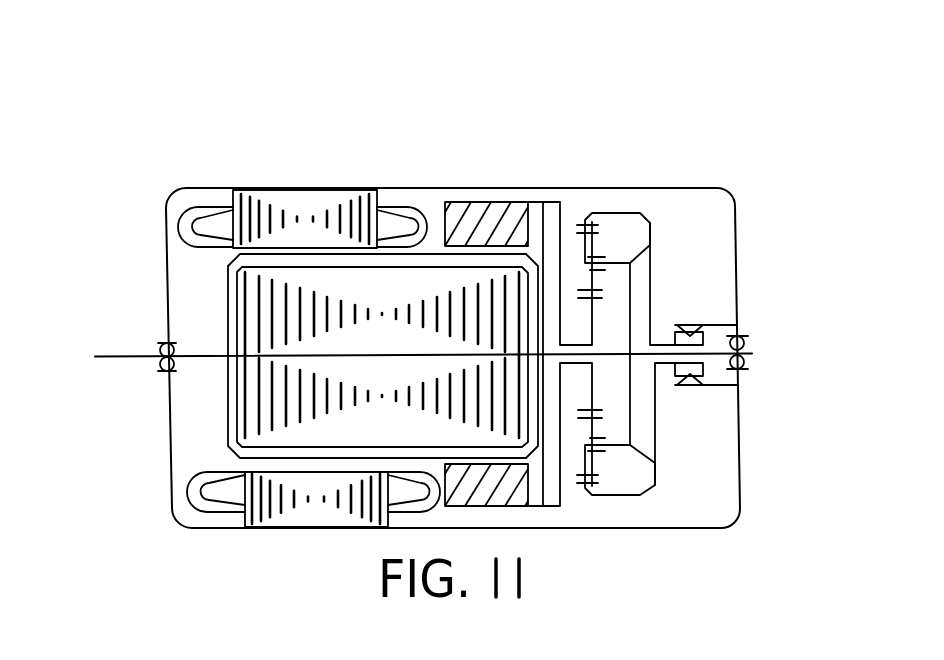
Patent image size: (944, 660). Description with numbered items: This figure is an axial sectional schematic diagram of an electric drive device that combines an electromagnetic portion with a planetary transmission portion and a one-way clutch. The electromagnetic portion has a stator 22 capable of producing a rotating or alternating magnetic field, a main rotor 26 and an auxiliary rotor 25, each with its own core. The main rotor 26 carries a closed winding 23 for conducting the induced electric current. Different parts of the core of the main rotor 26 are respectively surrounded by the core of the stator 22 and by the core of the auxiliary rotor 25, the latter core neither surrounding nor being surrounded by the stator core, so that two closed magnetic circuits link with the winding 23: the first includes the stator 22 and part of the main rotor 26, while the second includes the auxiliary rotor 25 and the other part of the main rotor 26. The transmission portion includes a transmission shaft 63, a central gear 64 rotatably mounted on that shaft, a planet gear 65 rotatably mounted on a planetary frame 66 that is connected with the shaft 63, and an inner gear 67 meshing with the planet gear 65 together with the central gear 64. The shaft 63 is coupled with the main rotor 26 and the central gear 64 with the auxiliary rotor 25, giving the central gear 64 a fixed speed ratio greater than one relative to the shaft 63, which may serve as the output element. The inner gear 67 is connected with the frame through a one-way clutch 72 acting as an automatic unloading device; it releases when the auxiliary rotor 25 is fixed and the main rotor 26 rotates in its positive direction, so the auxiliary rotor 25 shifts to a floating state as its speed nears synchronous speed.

The transmission shaft 63 is at (132, 352).
The stator 22 is at (250, 210).
The main rotor winding 23 is at (302, 258).
The main rotor 26 is at (346, 297).
The auxiliary rotor 25 is at (480, 213).
The central gear 64 is at (592, 325).
The planet gear 65 is at (592, 243).
The planetary frame 66 is at (650, 222).
The inner gear 67 is at (653, 278).
The one-way clutch 72 is at (690, 325).